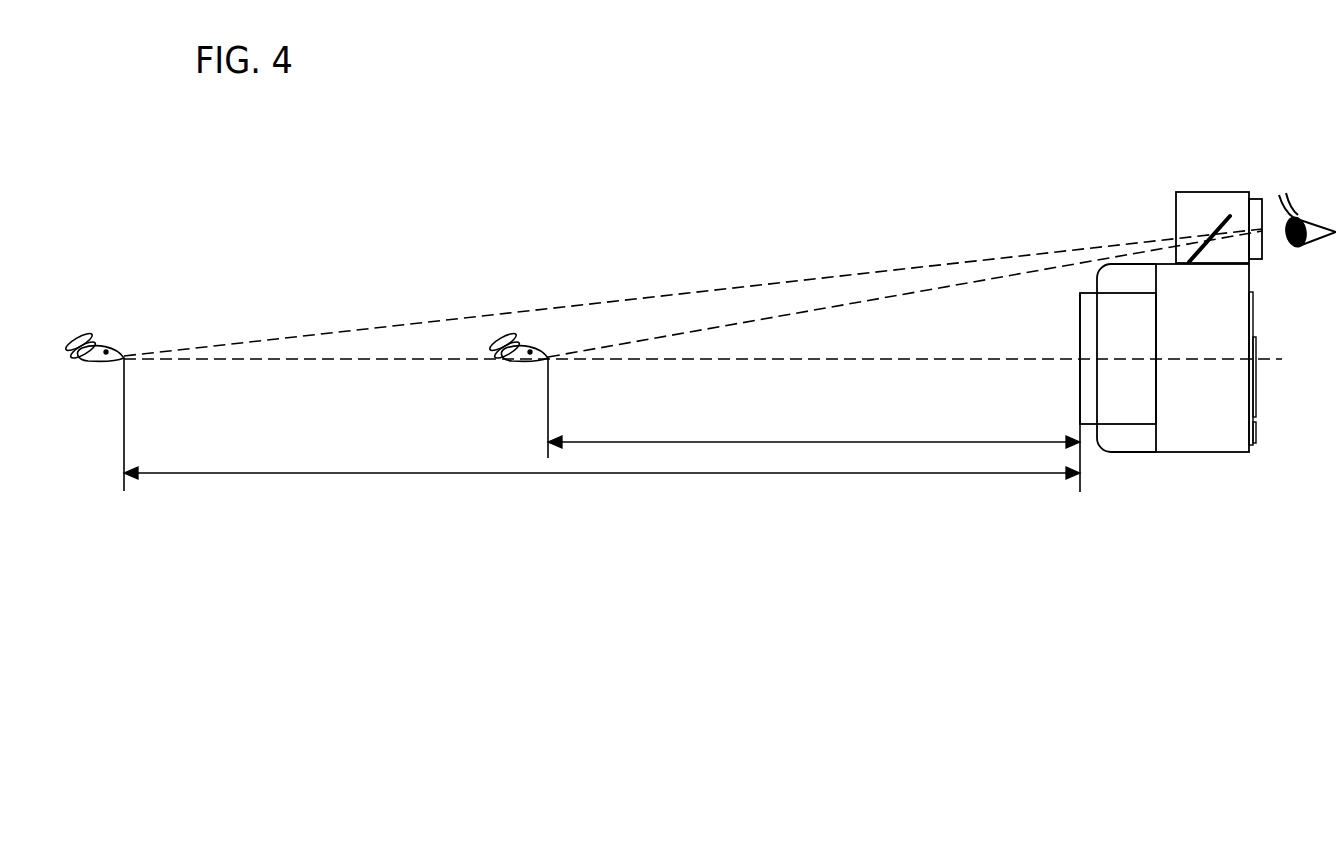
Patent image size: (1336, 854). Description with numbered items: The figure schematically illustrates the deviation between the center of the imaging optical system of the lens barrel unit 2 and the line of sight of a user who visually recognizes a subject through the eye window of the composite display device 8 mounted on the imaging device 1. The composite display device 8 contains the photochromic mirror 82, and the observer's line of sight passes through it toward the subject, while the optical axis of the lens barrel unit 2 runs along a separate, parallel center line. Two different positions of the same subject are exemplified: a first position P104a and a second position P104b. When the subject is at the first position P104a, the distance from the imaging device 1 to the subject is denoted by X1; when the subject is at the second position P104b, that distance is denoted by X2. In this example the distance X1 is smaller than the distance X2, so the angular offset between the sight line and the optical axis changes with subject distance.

The imaging device 1 is at (1272, 340).
The lens barrel unit 2 is at (1078, 310).
The composite display device 8 is at (1232, 192).
The photochromic mirror 82 is at (1217, 221).
The first position P104a is at (521, 340).
The second position P104b is at (97, 338).
The distance X1 is at (814, 431).
The distance X2 is at (602, 462).